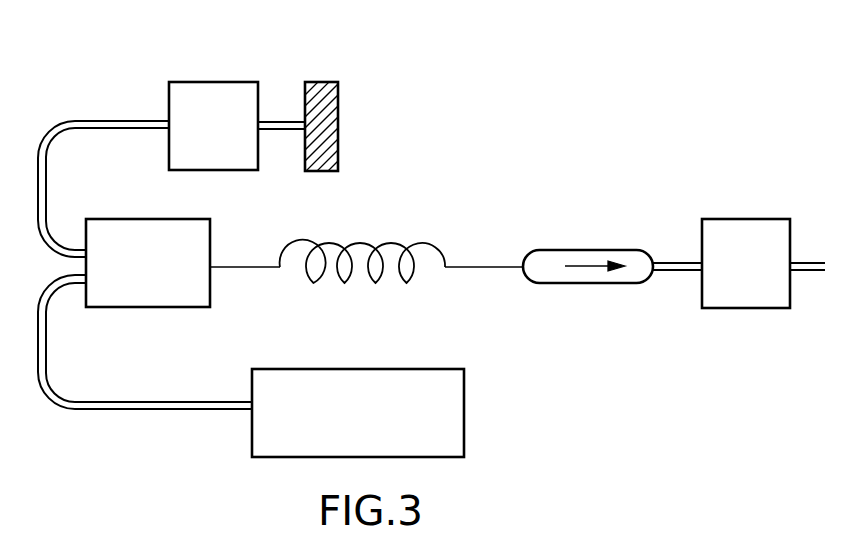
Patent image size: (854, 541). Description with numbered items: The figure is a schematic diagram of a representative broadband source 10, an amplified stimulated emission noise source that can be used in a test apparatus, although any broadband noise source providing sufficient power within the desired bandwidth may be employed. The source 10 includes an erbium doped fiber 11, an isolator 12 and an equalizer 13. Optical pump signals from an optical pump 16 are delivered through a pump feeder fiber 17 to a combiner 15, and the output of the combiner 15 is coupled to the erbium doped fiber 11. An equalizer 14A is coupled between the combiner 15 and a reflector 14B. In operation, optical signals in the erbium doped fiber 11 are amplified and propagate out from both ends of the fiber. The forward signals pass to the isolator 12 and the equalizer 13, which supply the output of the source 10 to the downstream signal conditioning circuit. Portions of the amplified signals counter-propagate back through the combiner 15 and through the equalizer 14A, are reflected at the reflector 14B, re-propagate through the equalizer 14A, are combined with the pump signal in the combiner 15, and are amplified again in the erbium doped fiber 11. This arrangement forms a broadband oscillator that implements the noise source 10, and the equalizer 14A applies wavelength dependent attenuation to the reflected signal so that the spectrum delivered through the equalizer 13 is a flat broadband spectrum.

The broadband source 10 is at (532, 145).
The erbium doped fiber 11 is at (349, 284).
The isolator 12 is at (588, 284).
The equalizer 13 is at (746, 219).
The equalizer 14A is at (216, 82).
The reflector 14B is at (318, 82).
The combiner 15 is at (148, 219).
The optical pump 16 is at (432, 369).
The pump feeder fiber 17 is at (133, 402).